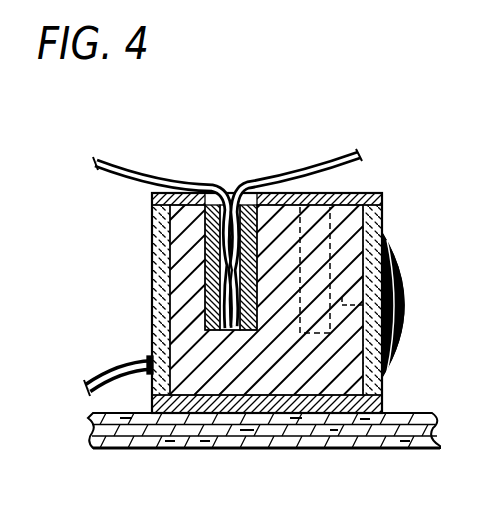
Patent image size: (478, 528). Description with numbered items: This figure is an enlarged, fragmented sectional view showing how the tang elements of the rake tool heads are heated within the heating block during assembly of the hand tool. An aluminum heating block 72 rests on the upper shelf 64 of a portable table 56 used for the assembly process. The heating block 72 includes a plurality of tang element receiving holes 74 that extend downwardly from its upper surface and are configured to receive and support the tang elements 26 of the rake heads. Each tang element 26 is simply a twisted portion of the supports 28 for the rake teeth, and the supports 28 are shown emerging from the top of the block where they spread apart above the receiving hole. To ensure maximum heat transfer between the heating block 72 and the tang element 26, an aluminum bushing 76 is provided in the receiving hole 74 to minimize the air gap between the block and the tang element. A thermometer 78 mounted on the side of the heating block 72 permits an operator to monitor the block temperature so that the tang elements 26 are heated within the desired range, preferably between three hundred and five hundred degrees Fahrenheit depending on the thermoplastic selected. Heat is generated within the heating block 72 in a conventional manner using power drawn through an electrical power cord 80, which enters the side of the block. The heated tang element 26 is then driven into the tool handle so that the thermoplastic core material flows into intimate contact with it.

The supports 28 is at (147, 172).
The heating block 72 is at (383, 200).
The tang element receiving holes 74 is at (207, 248).
The tang element 26 is at (228, 282).
The aluminum bushings 76 is at (215, 306).
The thermometer 78 is at (401, 305).
The electrical power cord 80 is at (103, 370).
The portable table 56 is at (137, 457).
The upper shelf 64 is at (408, 450).